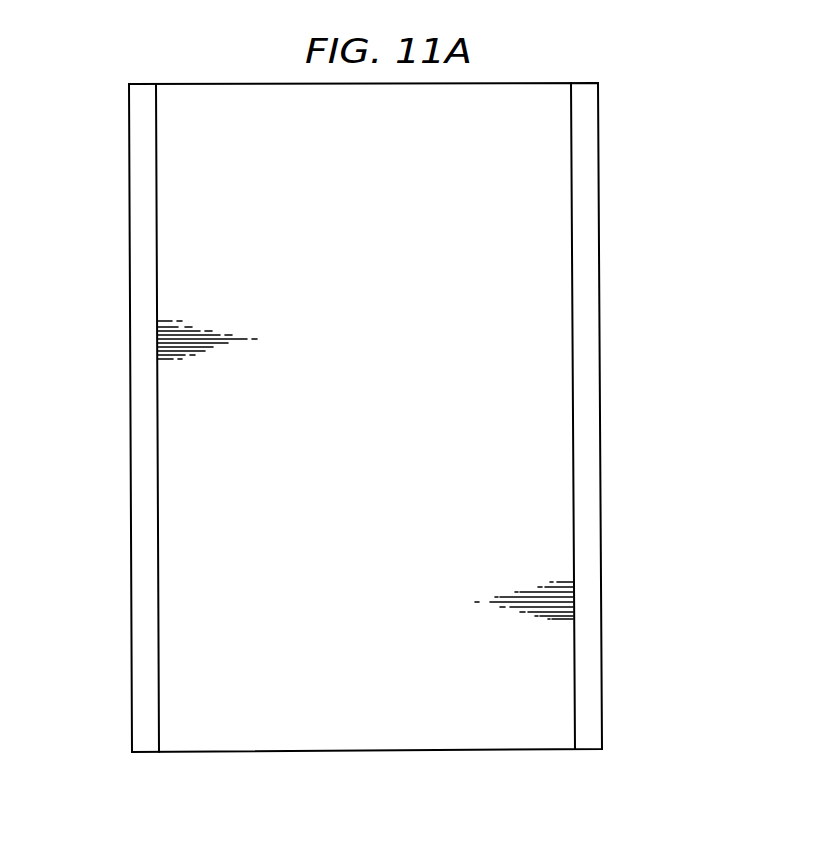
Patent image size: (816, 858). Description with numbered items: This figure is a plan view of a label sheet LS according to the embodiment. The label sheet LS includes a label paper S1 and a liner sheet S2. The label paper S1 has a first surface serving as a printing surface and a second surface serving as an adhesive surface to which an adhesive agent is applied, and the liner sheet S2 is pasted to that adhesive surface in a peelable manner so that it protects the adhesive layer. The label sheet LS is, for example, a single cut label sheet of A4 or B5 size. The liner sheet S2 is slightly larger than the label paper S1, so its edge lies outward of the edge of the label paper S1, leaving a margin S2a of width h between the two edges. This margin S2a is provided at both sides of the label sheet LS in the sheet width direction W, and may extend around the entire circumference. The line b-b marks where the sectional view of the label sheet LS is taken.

The label paper S1 is at (518, 167).
The liner sheet S2 is at (587, 243).
The margin S2a is at (145, 263).
The label sheet LS is at (429, 417).
The width of the margin h is at (535, 382).
The line b- b is at (120, 533).
The sheet width direction W is at (422, 779).